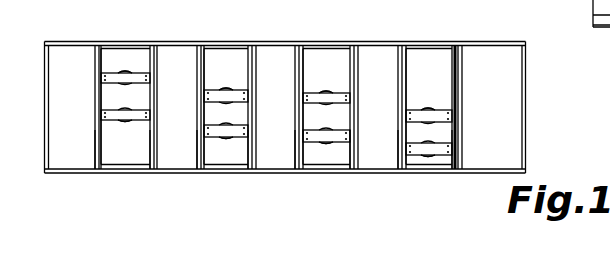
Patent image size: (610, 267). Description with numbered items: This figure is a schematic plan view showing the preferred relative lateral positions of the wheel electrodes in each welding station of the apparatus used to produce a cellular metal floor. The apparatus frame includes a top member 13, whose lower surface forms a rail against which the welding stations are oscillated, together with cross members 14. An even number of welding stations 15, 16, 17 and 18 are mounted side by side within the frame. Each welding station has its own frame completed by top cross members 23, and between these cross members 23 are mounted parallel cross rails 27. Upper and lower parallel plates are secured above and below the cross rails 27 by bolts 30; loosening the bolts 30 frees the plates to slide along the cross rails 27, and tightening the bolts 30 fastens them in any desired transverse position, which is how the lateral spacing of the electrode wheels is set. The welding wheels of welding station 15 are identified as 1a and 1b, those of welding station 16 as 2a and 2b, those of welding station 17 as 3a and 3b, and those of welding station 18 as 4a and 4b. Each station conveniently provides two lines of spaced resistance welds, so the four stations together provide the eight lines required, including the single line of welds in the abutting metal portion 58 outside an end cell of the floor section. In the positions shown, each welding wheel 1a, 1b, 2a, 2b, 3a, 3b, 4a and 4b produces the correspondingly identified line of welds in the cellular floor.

The top member 13 is at (477, 38).
The cross members 14 is at (44, 116).
The welding station 15 is at (113, 33).
The welding station 16 is at (222, 33).
The welding station 17 is at (328, 32).
The welding station 18 is at (430, 32).
The top cross members 23 is at (97, 68).
The cross rails 27 is at (105, 143).
The bolts 30 is at (110, 117).
The abutting metal portion 58 is at (593, 18).
The welding wheel 1a is at (125, 72).
The welding wheel 1b is at (124, 119).
The welding wheel 2a is at (225, 97).
The welding wheel 2b is at (225, 129).
The welding wheel 3a is at (327, 100).
The welding wheel 3b is at (328, 138).
The welding wheel 4a is at (428, 117).
The welding wheel 4b is at (428, 149).